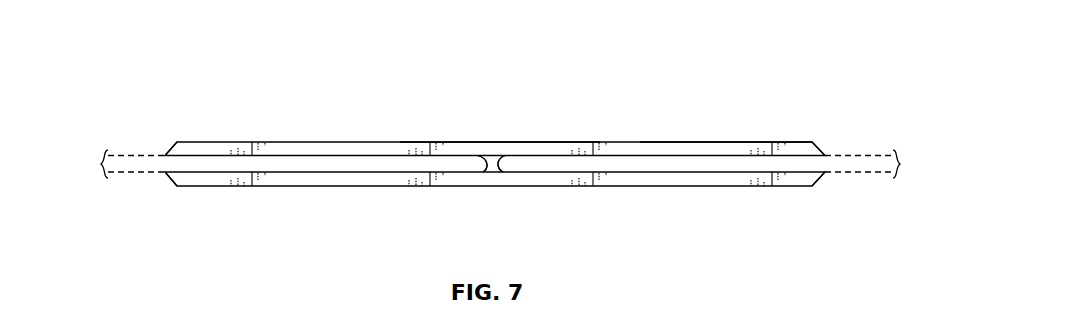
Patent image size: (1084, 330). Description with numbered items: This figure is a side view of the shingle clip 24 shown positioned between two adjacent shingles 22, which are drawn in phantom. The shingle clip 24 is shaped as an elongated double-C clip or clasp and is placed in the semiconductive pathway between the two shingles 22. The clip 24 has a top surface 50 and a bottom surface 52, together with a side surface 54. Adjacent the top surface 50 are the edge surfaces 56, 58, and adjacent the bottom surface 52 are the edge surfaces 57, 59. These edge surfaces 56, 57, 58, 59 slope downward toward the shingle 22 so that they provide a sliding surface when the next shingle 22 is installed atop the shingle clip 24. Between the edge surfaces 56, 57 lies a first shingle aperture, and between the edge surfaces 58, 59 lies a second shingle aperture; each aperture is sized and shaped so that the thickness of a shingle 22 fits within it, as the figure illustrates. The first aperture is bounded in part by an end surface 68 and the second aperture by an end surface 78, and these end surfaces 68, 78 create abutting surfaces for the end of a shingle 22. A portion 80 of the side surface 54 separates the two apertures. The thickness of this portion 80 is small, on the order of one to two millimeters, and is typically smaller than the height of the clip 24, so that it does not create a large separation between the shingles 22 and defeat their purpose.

The shingle 22 is at (148, 151).
The shingle clip 24 is at (700, 101).
The top surface 50 is at (632, 142).
The bottom surface 52 is at (662, 187).
The side surface 54 is at (727, 146).
The edge surface 56 is at (167, 154).
The edge surface 57 is at (167, 176).
The edge surface 58 is at (818, 152).
The edge surface 59 is at (818, 178).
The end surface 68 is at (478, 158).
The end surface 78 is at (500, 162).
The portion of the side surface 80 is at (492, 173).